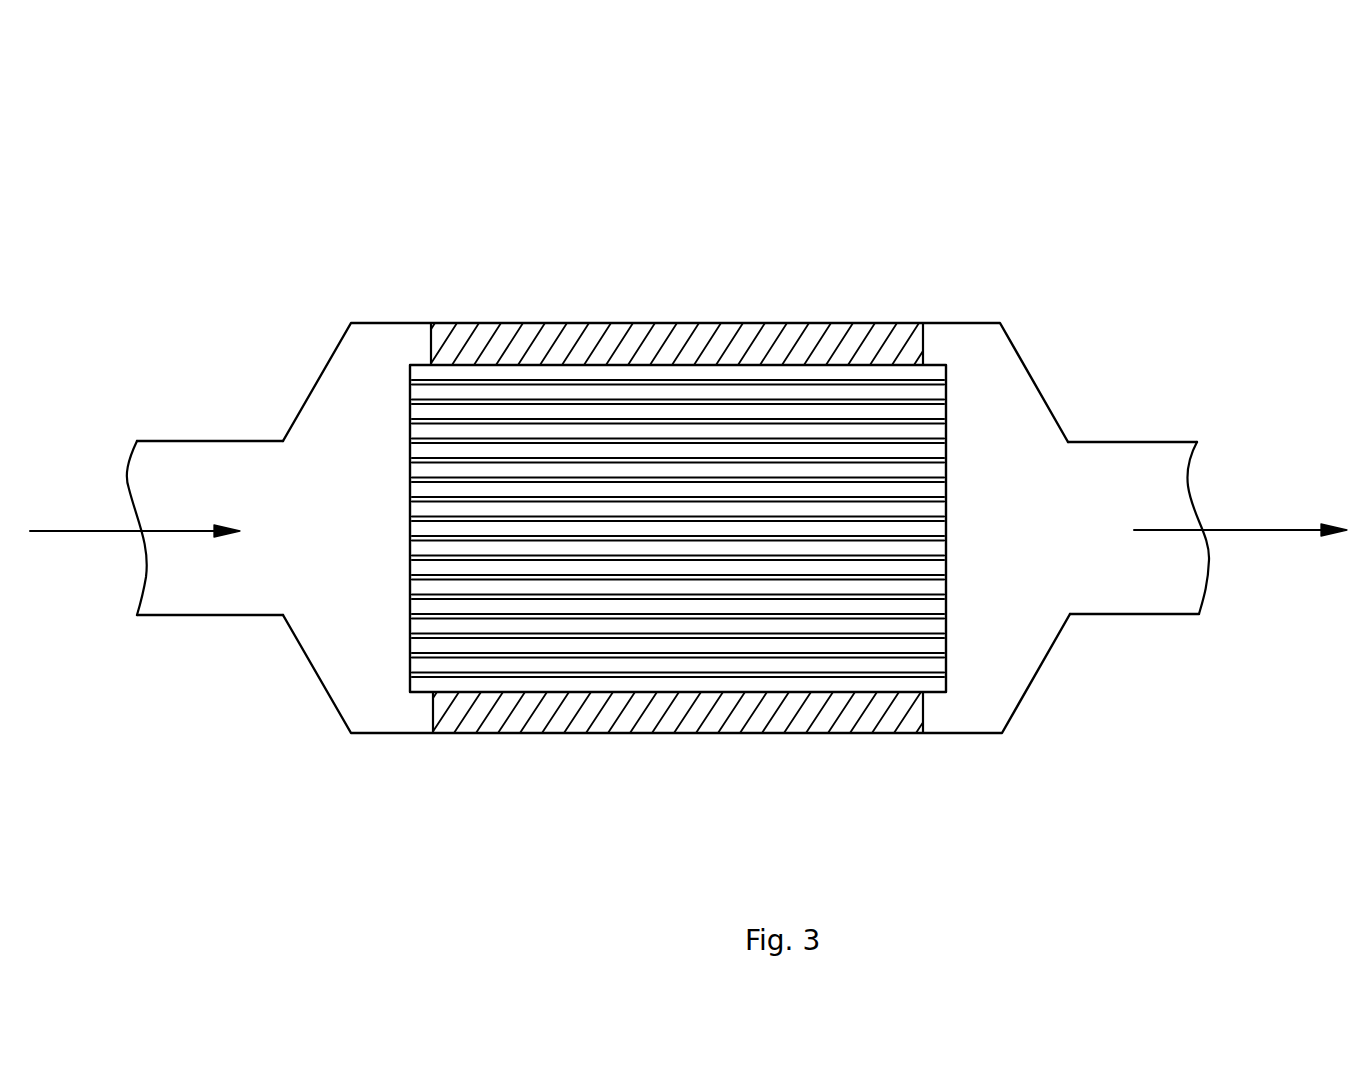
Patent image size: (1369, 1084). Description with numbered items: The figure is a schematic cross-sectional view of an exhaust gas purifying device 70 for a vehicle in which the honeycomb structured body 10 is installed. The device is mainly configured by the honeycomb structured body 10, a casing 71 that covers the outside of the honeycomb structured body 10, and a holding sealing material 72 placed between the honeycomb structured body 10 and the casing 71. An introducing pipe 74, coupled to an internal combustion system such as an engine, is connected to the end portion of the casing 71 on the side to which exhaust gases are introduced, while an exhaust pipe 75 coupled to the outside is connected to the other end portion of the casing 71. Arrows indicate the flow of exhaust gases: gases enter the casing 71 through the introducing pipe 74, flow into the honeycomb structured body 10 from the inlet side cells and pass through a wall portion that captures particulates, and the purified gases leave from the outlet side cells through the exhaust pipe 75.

The exhaust gas purifying device 70 is at (828, 216).
The casing 71 is at (943, 735).
The holding sealing material 72 is at (535, 340).
The honeycomb structured body 10 is at (962, 410).
The introducing pipe 74 is at (153, 468).
The exhaust pipe 75 is at (1160, 472).